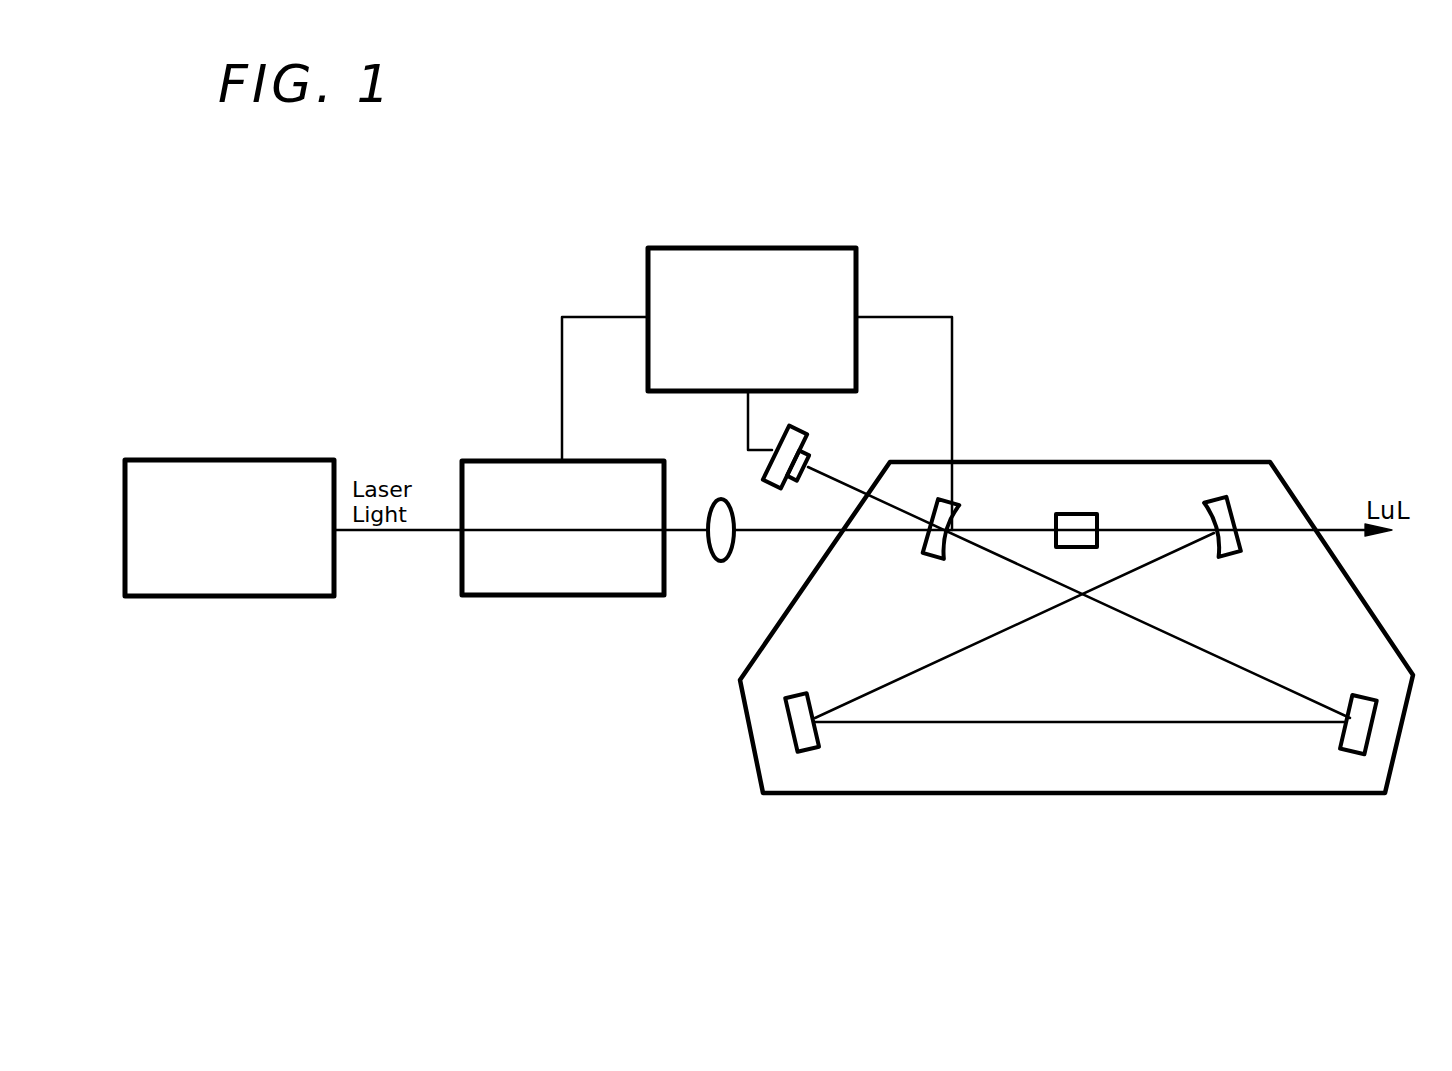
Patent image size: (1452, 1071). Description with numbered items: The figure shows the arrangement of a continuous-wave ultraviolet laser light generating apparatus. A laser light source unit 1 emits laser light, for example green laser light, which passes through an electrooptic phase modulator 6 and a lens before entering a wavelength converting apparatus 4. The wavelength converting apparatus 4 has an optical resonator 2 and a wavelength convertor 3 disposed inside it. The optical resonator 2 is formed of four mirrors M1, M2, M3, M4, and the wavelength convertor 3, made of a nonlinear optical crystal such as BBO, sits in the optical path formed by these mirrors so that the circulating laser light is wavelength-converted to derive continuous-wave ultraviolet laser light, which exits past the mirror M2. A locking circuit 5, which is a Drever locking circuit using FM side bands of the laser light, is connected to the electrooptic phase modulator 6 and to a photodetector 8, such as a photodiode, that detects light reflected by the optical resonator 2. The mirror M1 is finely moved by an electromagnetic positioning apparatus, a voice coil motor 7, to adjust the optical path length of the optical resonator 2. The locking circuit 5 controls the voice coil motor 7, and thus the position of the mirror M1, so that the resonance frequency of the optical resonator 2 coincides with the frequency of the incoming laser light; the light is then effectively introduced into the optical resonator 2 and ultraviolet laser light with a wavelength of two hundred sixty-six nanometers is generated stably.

The laser light source unit 1 is at (250, 458).
The optical resonator 2 is at (997, 778).
The wavelength convertor 3 is at (1088, 513).
The wavelength converting apparatus 4 is at (1322, 874).
The locking circuit 5 is at (768, 247).
The electrooptic phase modulator 6 is at (512, 459).
The voice coil motor 7 is at (955, 498).
The photodetector 8 is at (812, 430).
The mirror M1 is at (928, 560).
The mirror M2 is at (1221, 500).
The mirror M3 is at (808, 752).
The mirror M4 is at (1367, 695).